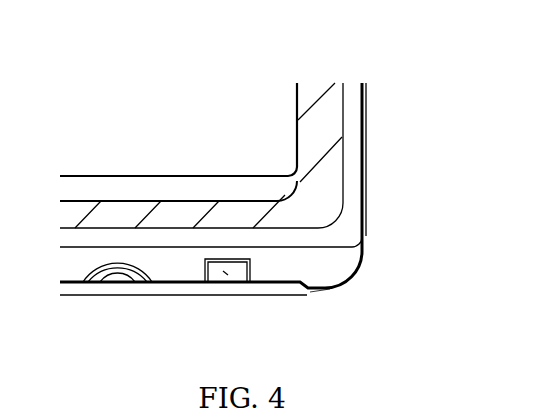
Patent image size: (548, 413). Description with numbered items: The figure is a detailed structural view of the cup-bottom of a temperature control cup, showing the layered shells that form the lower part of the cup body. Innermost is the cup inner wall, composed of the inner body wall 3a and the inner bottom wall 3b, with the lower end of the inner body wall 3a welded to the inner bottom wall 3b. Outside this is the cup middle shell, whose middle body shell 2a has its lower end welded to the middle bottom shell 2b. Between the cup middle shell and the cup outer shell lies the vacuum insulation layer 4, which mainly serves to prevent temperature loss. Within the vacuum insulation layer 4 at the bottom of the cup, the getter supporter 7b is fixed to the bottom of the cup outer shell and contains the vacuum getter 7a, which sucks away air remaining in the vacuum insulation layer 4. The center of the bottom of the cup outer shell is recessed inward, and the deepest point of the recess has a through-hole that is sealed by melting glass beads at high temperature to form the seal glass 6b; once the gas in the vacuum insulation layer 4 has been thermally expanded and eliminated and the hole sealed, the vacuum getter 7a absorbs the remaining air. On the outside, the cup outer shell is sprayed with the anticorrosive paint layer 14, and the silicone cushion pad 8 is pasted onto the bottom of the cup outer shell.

The middle body shell 2a is at (345, 108).
The middle bottom shell 2b is at (345, 195).
The inner body wall 3a is at (295, 152).
The inner bottom wall 3b is at (107, 185).
The vacuum insulation layer 4 is at (340, 238).
The seal glass 6b is at (117, 278).
The vacuum getter 7a is at (213, 290).
The getter supporter 7b is at (245, 295).
The silicone cushion pad 8 is at (290, 290).
The anticorrosive paint layer 14 is at (330, 292).